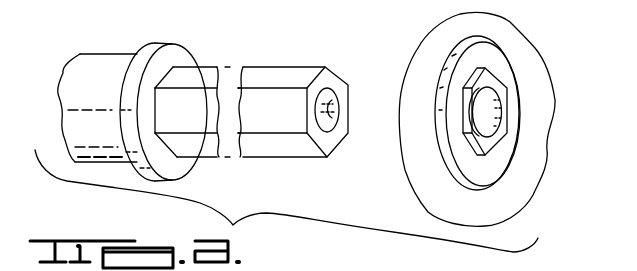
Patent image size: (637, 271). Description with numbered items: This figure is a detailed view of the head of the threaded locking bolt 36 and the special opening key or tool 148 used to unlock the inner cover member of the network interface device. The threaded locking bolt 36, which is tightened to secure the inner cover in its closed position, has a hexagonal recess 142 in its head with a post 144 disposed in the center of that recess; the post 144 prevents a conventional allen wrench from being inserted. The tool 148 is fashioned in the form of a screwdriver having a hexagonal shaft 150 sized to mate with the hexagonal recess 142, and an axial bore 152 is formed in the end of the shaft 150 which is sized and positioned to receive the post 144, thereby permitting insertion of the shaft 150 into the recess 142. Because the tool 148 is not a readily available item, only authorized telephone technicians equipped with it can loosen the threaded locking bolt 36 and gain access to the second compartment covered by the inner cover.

The opening key or tool 148 is at (251, 64).
The shaft 150 is at (297, 73).
The axial bore 152 is at (331, 100).
The threaded locking bolt 36 is at (463, 163).
The hexagonal recess 142 is at (486, 81).
The post 144 is at (500, 112).